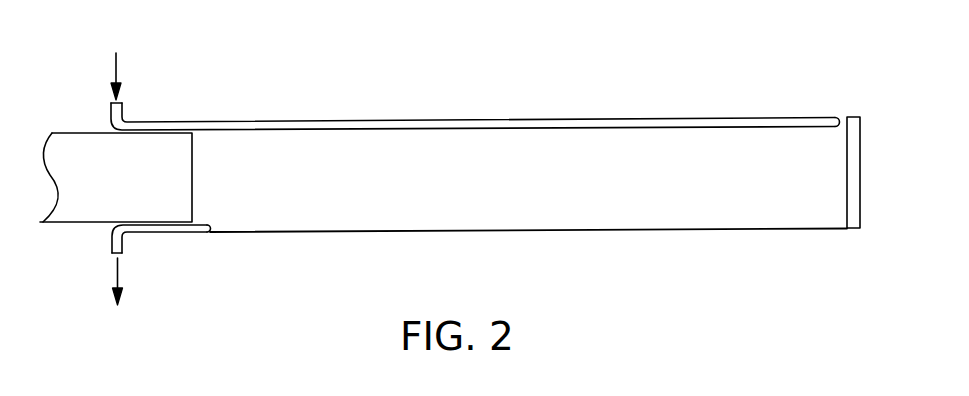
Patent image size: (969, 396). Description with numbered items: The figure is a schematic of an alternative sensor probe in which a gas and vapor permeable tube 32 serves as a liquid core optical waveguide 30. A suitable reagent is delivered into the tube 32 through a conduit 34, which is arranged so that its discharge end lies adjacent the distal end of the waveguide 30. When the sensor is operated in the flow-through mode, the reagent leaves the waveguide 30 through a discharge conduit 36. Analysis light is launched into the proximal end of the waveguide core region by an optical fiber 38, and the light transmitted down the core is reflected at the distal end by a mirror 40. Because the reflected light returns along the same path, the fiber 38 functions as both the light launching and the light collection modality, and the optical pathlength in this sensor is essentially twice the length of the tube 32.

The liquid core optical waveguide 30 is at (483, 94).
The gas and vapor permeable tube 32 is at (516, 231).
The conduit 34 is at (230, 122).
The discharge conduit 36 is at (112, 236).
The optical fiber 38 is at (80, 132).
The mirror 40 is at (847, 178).